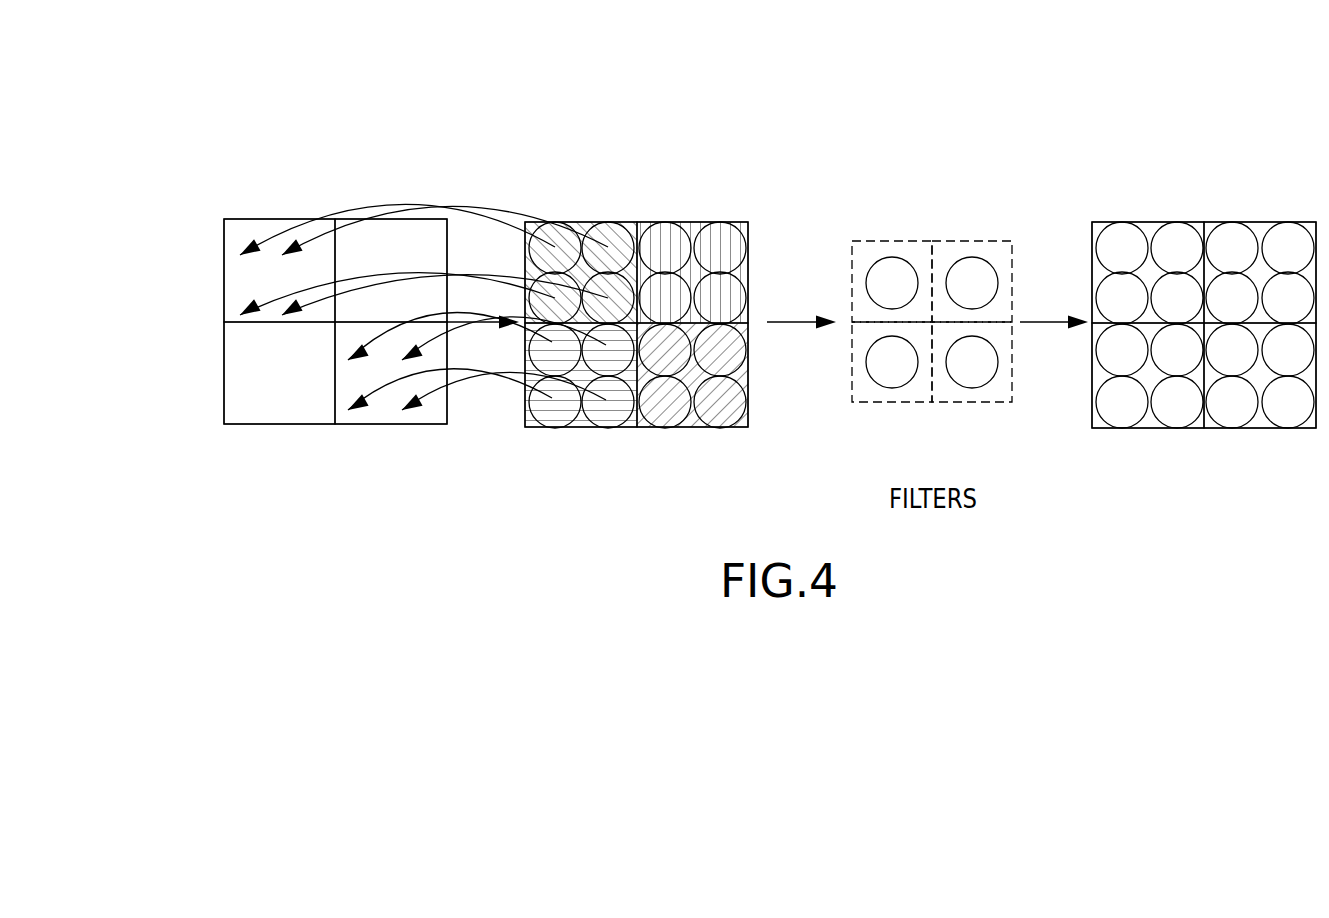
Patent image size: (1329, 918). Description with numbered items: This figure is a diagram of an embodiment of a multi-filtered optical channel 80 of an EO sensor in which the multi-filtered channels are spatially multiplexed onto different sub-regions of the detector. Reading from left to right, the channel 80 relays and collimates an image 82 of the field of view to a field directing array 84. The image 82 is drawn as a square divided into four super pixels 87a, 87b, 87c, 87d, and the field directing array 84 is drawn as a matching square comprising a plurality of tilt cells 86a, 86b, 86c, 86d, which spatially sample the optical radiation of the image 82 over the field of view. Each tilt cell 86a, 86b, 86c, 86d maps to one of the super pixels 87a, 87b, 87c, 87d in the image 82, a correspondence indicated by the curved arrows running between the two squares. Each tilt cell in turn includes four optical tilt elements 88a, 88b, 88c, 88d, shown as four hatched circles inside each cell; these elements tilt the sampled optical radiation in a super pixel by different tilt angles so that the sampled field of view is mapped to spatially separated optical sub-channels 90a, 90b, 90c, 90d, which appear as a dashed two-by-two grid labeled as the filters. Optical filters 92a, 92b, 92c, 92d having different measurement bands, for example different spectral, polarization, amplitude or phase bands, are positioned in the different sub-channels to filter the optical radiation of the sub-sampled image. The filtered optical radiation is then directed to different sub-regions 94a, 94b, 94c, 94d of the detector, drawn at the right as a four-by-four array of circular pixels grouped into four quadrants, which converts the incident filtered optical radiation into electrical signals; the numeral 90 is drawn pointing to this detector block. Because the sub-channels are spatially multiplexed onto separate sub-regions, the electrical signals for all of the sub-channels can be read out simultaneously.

The multi-filtered optical channel 80 is at (943, 94).
The image 82 is at (295, 158).
The field directing array 84 is at (674, 138).
The tilt cell 86a is at (577, 222).
The tilt cell 86b is at (737, 222).
The tilt cell 86c is at (518, 427).
The tilt cell 86d is at (740, 427).
The super pixel 87a is at (224, 257).
The super pixel 87b is at (403, 219).
The super pixel 87c is at (224, 378).
The super pixel 87d is at (407, 424).
The optical tilt element 88a is at (545, 236).
The optical tilt element 88b is at (616, 236).
The optical tilt element 88c is at (545, 290).
The optical tilt element 88d is at (622, 300).
The detector 90 is at (1142, 470).
The optical sub-channel 90a is at (868, 241).
The optical sub-channel 90b is at (1000, 241).
The optical sub-channel 90c is at (860, 403).
The optical sub-channel 90d is at (1012, 392).
The optical filter 92a is at (898, 268).
The optical filter 92b is at (968, 268).
The optical filter 92c is at (893, 380).
The optical filter 92d is at (973, 380).
The detector sub-region 94a is at (1145, 222).
The detector sub-region 94b is at (1260, 222).
The detector sub-region 94c is at (1137, 428).
The detector sub-region 94d is at (1258, 428).